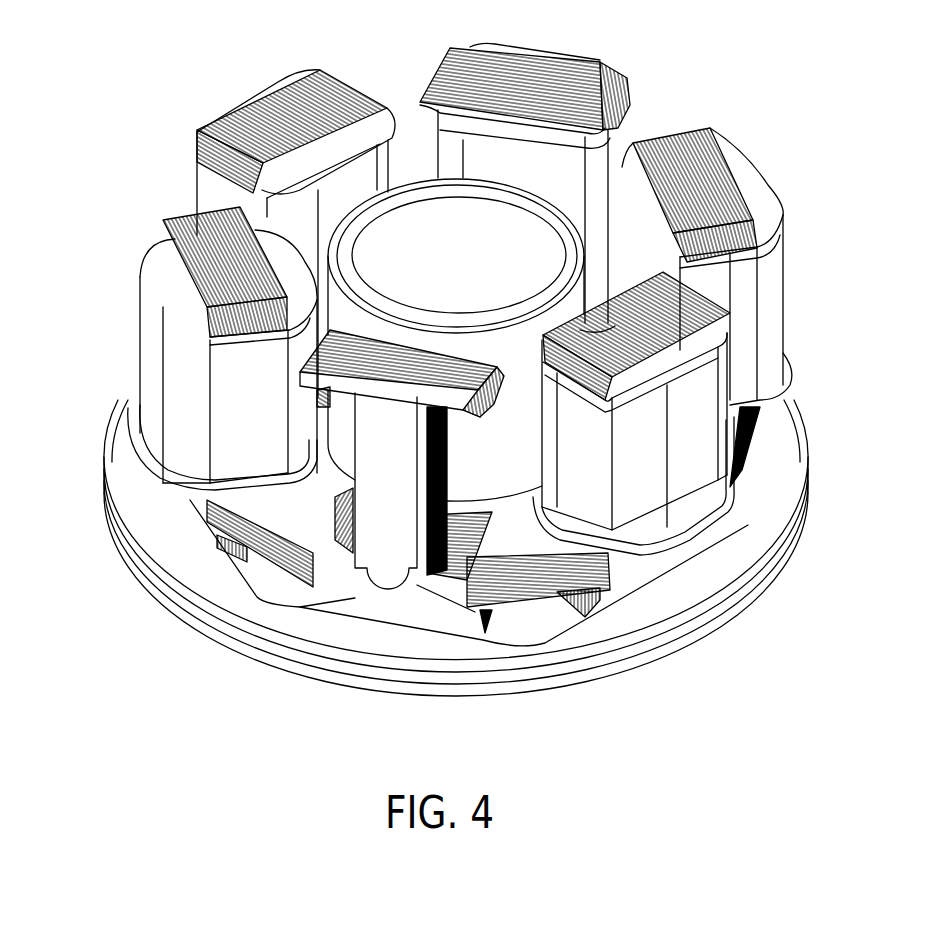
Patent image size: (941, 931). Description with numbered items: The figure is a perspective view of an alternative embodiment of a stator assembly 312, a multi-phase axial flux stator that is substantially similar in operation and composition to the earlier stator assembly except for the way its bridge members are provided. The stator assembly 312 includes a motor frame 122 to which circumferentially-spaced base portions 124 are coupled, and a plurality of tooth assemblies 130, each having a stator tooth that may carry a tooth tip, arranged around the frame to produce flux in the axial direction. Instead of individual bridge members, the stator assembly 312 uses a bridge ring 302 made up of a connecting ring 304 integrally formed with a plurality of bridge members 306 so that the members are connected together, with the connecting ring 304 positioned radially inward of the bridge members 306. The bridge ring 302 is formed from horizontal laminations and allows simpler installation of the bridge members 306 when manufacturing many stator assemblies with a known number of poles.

The motor frame 122 is at (780, 462).
The base portions 124 is at (348, 588).
The tooth assemblies 130 is at (414, 503).
The bridge ring 302 is at (257, 512).
The connecting ring 304 is at (478, 560).
The bridge members 306 is at (297, 530).
The stator assembly 312 is at (805, 90).